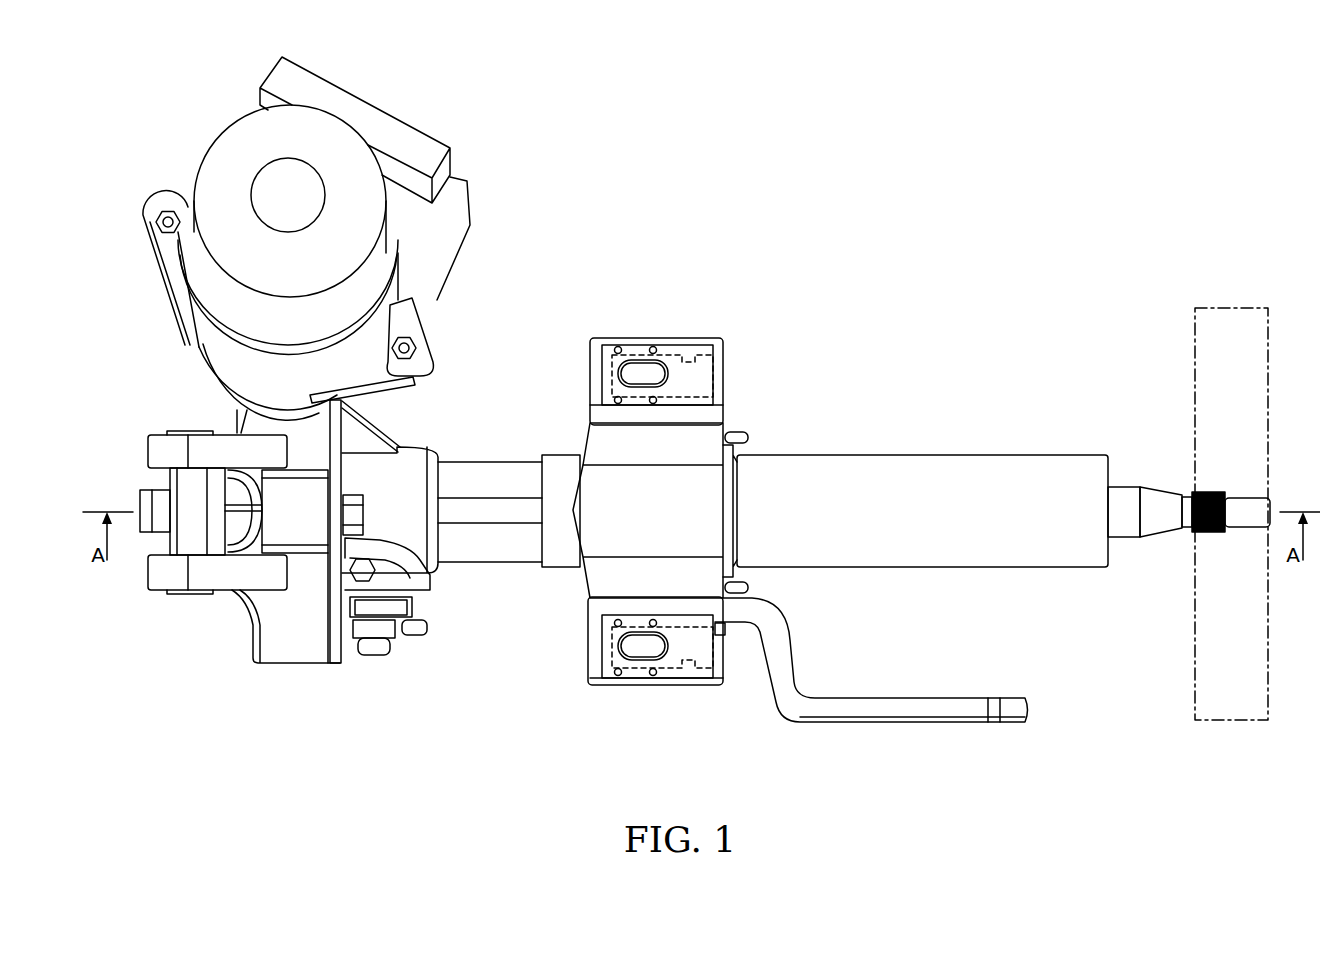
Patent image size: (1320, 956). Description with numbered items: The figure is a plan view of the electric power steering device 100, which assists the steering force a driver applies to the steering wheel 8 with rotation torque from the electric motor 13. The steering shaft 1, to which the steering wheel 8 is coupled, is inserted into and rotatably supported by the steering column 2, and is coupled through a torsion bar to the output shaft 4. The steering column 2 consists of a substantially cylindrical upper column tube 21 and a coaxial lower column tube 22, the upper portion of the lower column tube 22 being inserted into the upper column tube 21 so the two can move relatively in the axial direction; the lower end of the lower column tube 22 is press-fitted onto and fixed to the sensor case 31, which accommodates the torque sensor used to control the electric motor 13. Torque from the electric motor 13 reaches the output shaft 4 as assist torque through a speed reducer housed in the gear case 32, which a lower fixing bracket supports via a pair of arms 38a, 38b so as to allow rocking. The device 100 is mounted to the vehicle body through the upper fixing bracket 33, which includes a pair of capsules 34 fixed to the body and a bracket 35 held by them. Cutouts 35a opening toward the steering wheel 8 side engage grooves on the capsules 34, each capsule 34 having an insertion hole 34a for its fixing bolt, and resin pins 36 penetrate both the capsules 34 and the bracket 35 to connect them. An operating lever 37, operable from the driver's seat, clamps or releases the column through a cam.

The steering shaft 1 is at (1142, 470).
The steering column 2 is at (840, 479).
The output shaft 4 is at (155, 505).
The steering wheel 8 is at (1220, 722).
The electric motor 13 is at (360, 192).
The upper column tube 21 is at (884, 458).
The lower column tube 22 is at (473, 478).
The sensor case 31 is at (418, 455).
The gear case 32 is at (311, 645).
The upper fixing bracket 33 is at (780, 514).
The capsule 34 is at (697, 383).
The insertion hole 34a is at (628, 378).
The bracket 35 is at (700, 420).
The cutout 35a is at (683, 355).
The pin 36 is at (653, 347).
The operating lever 37 is at (907, 712).
The arm 38a is at (177, 578).
The arm 38b is at (170, 445).
The electric power steering device 100 is at (840, 454).